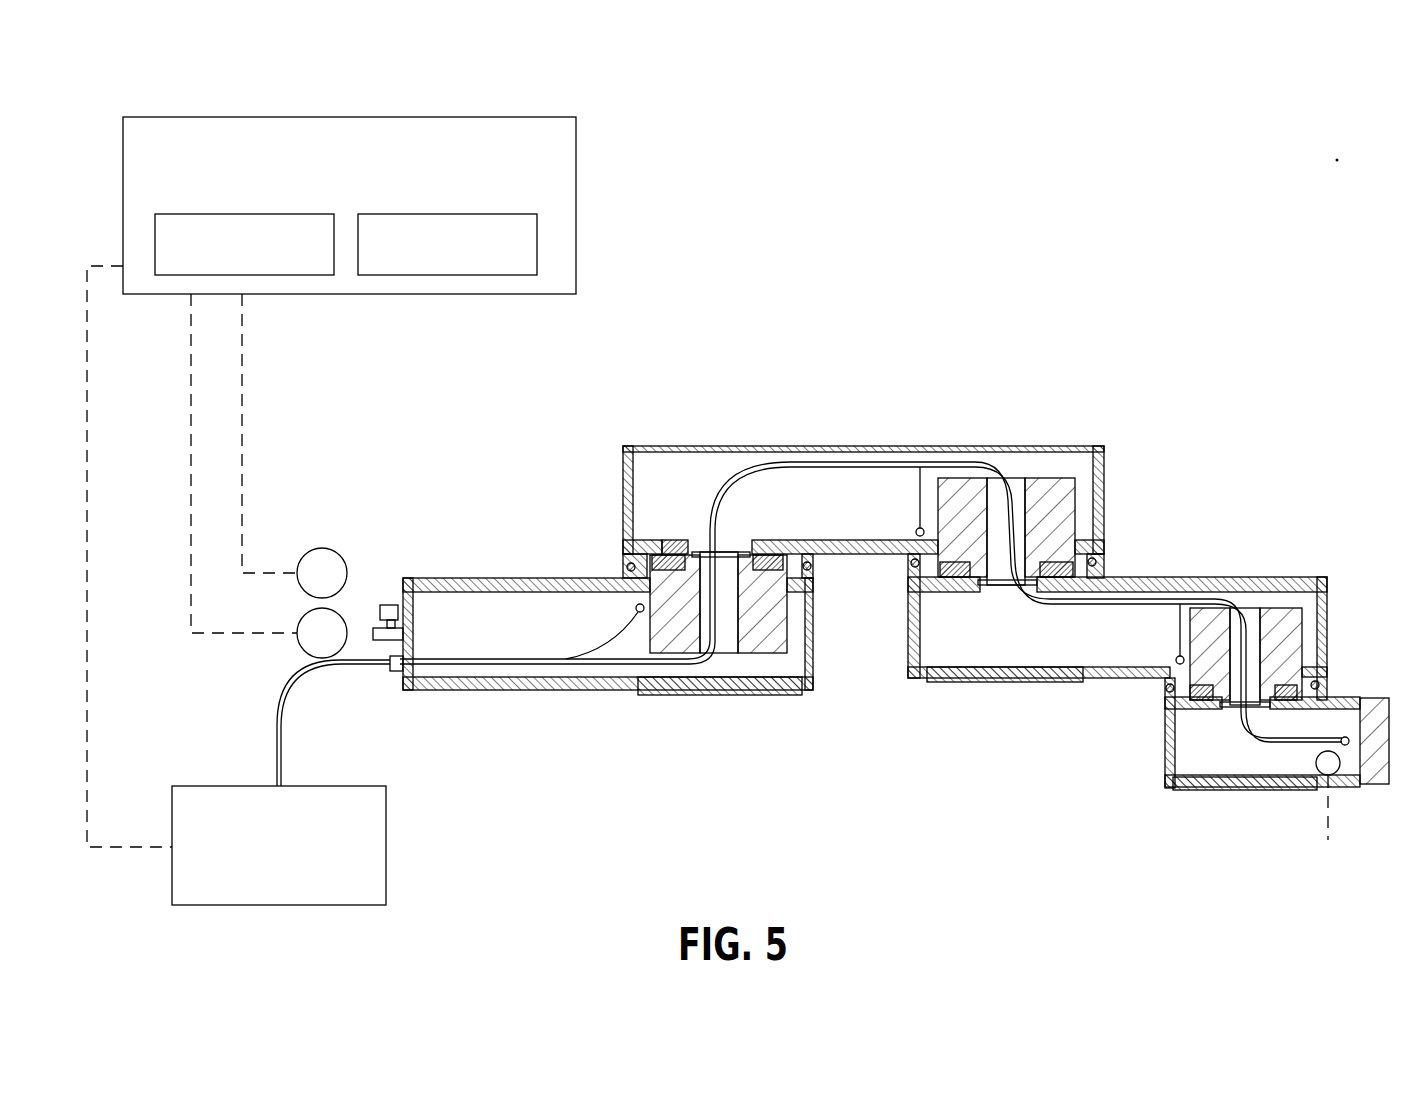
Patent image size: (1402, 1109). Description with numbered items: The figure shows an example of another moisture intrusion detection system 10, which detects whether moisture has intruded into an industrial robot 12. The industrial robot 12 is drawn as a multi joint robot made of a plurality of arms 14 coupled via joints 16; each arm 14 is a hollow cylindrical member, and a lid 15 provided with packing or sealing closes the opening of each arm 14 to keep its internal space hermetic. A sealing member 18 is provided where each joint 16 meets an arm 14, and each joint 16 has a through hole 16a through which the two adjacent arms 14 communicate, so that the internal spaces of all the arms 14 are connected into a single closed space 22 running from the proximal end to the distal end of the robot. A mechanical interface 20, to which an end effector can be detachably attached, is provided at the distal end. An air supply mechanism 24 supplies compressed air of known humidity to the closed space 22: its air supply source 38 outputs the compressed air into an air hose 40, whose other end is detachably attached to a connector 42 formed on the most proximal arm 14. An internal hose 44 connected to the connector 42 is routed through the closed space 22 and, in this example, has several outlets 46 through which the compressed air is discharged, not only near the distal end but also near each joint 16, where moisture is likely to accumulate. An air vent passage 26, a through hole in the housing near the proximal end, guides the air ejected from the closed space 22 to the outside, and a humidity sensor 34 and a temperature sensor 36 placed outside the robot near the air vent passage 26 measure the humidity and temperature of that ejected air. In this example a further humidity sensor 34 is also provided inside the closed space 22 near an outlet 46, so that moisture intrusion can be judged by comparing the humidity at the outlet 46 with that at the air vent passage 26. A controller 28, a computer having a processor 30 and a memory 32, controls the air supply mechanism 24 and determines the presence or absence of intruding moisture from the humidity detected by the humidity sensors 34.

The moisture intrusion detection system 10 is at (800, 265).
The industrial robot 12 is at (1033, 421).
The arm 14 is at (524, 578).
The lid 15 is at (676, 695).
The joint 16 is at (790, 635).
The through hole 16a is at (728, 650).
The sealing member 18 is at (665, 541).
The mechanical interface 20 is at (1380, 788).
The closed space 22 is at (853, 522).
The air supply mechanism 24 is at (475, 806).
The air vent passage 26 is at (413, 637).
The controller 28 is at (349, 208).
The processor 30 is at (290, 275).
The memory 32 is at (502, 275).
The humidity sensor 34 is at (300, 645).
The temperature sensor 36 is at (325, 548).
The air supply source 38 is at (386, 848).
The air hose 40 is at (276, 751).
The connector 42 is at (394, 676).
The internal hose 44 is at (515, 668).
The outlet 46 is at (636, 605).